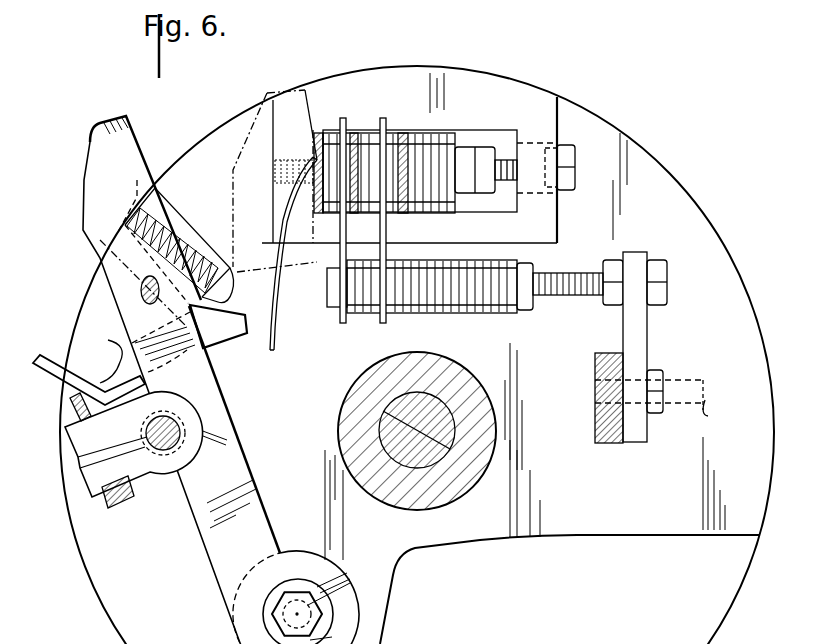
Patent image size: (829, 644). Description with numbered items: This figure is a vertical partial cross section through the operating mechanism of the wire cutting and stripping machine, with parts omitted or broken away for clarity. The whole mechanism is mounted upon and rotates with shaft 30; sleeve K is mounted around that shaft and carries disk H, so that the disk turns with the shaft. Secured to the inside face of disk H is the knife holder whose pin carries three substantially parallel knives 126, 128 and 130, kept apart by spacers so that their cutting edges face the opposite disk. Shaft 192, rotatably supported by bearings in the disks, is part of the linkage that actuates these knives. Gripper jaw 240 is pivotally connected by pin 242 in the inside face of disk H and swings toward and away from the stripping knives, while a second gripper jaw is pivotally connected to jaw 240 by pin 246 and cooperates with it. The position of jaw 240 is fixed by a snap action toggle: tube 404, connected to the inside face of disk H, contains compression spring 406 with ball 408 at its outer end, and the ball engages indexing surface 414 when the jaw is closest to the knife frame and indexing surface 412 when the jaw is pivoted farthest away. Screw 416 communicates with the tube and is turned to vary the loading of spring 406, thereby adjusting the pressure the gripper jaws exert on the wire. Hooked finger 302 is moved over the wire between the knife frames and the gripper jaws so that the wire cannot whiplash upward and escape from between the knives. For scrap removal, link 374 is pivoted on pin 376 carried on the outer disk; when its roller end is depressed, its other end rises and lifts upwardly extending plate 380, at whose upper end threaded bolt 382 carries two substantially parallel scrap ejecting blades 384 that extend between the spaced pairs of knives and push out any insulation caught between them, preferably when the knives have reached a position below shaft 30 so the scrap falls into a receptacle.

The gripper jaw 240 is at (110, 133).
The knife 130 is at (319, 135).
The knife 128 is at (355, 133).
The knife 126 is at (404, 133).
The scrap ejecting blades 384 is at (390, 233).
The threaded bolt 382 is at (490, 318).
The plate 380 is at (632, 320).
The link 374 is at (605, 420).
The pin 376 is at (672, 404).
The shaft 192 is at (180, 448).
The sleeve K is at (348, 425).
The shaft 30 is at (425, 424).
The pin 242 is at (347, 573).
The disk H is at (600, 522).
The pin 246 is at (140, 287).
The indexing surface 414 is at (89, 365).
The screw 416 is at (143, 248).
The tube 404 is at (188, 210).
The compression spring 406 is at (206, 226).
The indexing surface 412 is at (245, 315).
The ball 408 is at (217, 347).
The hooked finger 302 is at (292, 337).